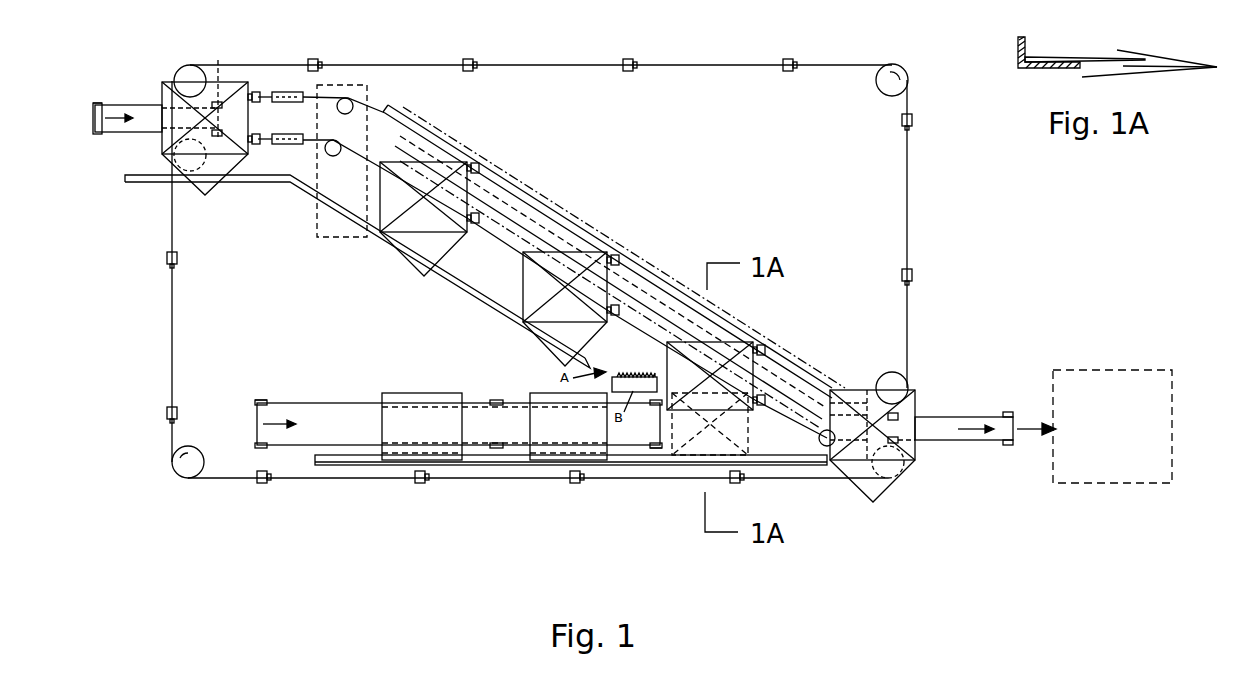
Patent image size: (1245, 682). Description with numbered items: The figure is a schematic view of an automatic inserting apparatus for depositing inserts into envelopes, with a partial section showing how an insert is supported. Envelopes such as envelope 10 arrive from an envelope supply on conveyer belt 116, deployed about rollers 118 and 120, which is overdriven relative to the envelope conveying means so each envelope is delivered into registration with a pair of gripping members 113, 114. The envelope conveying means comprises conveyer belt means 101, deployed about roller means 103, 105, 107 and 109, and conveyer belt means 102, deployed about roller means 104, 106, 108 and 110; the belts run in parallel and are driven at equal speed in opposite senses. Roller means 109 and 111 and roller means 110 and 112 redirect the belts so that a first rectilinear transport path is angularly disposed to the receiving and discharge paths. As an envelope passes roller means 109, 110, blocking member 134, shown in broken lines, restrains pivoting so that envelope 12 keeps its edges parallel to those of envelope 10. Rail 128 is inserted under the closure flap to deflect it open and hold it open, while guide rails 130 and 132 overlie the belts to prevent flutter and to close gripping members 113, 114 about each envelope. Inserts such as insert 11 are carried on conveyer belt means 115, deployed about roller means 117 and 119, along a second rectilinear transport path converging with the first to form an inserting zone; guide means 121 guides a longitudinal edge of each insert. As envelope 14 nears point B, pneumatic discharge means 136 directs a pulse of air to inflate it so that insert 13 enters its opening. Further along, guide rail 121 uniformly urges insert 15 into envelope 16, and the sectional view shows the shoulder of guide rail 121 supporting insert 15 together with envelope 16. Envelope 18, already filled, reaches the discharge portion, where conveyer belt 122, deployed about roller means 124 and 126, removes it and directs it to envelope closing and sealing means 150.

In FIG. 1, the envelope 10 is at (205, 138).
In FIG. 1, the insert 11 is at (494, 426).
In FIG. 1, the envelope 12 is at (423, 219).
In FIG. 1, the insert 13 is at (568, 426).
In FIG. 1, the envelope 14 is at (565, 309).
In FIG. 1, the insert 15 is at (710, 424).
In FIG. 1A, the insert 15 is at (1052, 57).
In FIG. 1, the envelope 16 is at (710, 376).
In FIG. 1A, the envelope 16 is at (1147, 52).
In FIG. 1, the envelope 18 is at (872, 446).
In FIG. 1, the conveyer belt means 101 is at (173, 325).
In FIG. 1, the conveyer belt means 102 is at (394, 64).
In FIG. 1, the roller means 103 is at (178, 158).
In FIG. 1, the roller means 104 is at (181, 70).
In FIG. 1, the roller means 105 is at (175, 470).
In FIG. 1, the roller means 106 is at (900, 70).
In FIG. 1, the roller means 107 is at (896, 473).
In FIG. 1, the roller means 108 is at (890, 375).
In FIG. 1, the roller means 109 is at (336, 157).
In FIG. 1, the roller means 110 is at (336, 115).
In FIG. 1, the roller means 111 is at (818, 438).
In FIG. 1, the roller means 112 is at (843, 392).
In FIG. 1, the gripping members 113 is at (262, 137).
In FIG. 1, the gripping members 114 is at (318, 60).
In FIG. 1, the conveyer belt means 115 is at (345, 403).
In FIG. 1, the conveyer belt 116 is at (120, 106).
In FIG. 1, the roller means 117 is at (258, 401).
In FIG. 1, the roller 118 is at (94, 103).
In FIG. 1, the roller means 119 is at (656, 450).
In FIG. 1, the roller 120 is at (218, 60).
In FIG. 1, the guide means 121 is at (513, 465).
In FIG. 1A, the guide means 121 is at (1045, 69).
In FIG. 1, the conveyer belt 122 is at (925, 441).
In FIG. 1, the roller means 124 is at (896, 415).
In FIG. 1, the roller means 126 is at (1008, 443).
In FIG. 1, the deflecting means 128 is at (290, 186).
In FIG. 1, the guide rail 130 is at (286, 144).
In FIG. 1, the guide rail 132 is at (277, 92).
In FIG. 1, the blocking member 134 is at (368, 92).
In FIG. 1, the pneumatic discharge means 136 is at (647, 382).
In FIG. 1, the envelope closing and sealing means 150 is at (1130, 370).